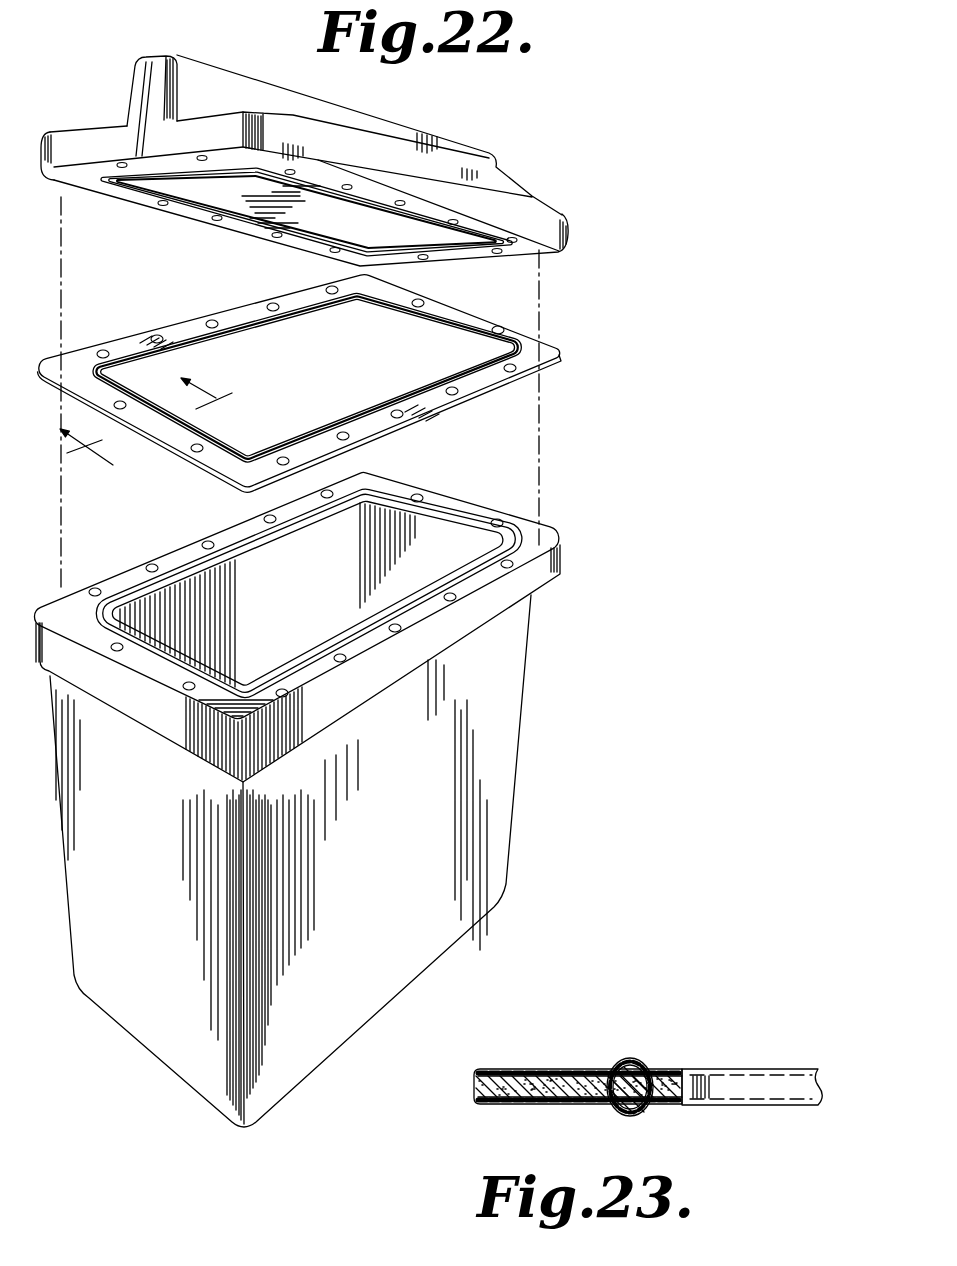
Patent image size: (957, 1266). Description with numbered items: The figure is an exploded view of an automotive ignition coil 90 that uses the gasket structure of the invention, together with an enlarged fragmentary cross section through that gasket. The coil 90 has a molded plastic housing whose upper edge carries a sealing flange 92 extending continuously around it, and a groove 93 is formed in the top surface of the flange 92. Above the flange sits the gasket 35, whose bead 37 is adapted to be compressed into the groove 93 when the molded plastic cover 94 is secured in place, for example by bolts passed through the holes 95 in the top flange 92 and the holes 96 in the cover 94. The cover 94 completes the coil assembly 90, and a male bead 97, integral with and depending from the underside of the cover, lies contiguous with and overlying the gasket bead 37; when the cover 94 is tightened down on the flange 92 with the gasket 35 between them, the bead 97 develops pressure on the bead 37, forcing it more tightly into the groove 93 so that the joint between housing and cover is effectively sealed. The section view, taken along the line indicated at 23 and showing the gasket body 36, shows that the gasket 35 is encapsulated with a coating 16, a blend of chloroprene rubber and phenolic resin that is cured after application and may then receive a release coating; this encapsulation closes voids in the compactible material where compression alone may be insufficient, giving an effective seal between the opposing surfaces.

In FIG. 23, the coating 16 is at (752, 1084).
In FIG. 22, the section line 23 is at (161, 433).
In FIG. 22, the gasket 35 is at (307, 384).
In FIG. 23, the gasket 35 is at (657, 1093).
In FIG. 22, the gasket body 36 is at (478, 393).
In FIG. 23, the gasket body 36 is at (512, 1102).
In FIG. 22, the bead 37 is at (126, 360).
In FIG. 23, the bead 37 is at (618, 1116).
In FIG. 22, the coil 90 is at (309, 799).
In FIG. 22, the sealing flange 92 is at (502, 732).
In FIG. 22, the groove 93 is at (514, 538).
In FIG. 22, the cover 94 is at (317, 160).
In FIG. 22, the holes 95 is at (95, 588).
In FIG. 22, the holes 96 is at (110, 184).
In FIG. 22, the male bead 97 is at (147, 192).